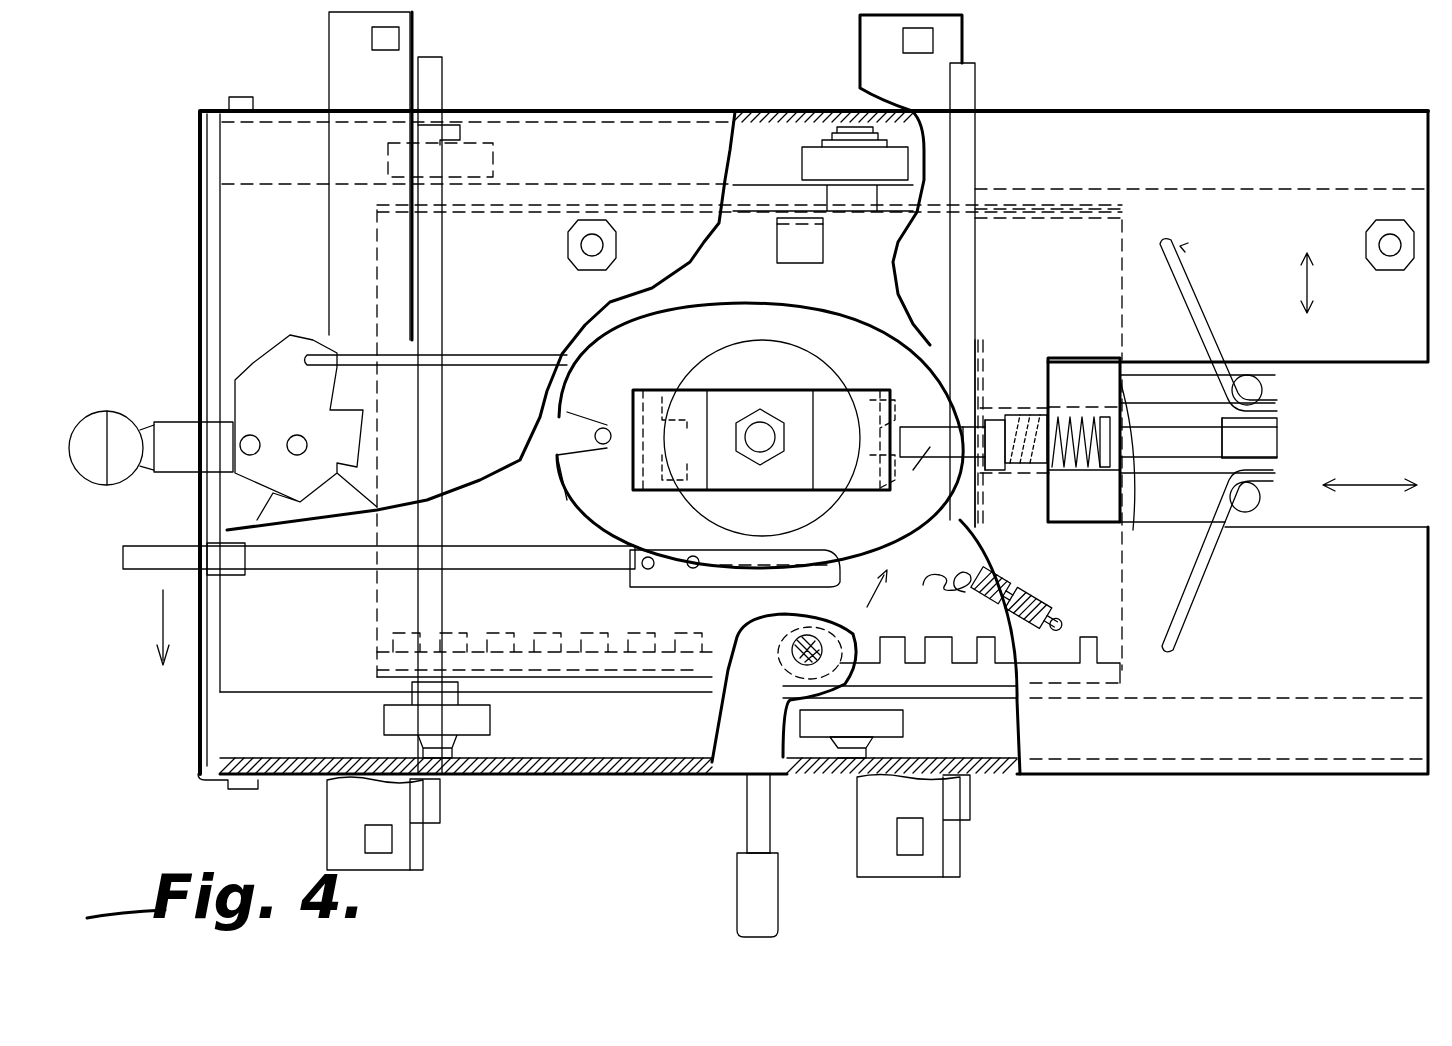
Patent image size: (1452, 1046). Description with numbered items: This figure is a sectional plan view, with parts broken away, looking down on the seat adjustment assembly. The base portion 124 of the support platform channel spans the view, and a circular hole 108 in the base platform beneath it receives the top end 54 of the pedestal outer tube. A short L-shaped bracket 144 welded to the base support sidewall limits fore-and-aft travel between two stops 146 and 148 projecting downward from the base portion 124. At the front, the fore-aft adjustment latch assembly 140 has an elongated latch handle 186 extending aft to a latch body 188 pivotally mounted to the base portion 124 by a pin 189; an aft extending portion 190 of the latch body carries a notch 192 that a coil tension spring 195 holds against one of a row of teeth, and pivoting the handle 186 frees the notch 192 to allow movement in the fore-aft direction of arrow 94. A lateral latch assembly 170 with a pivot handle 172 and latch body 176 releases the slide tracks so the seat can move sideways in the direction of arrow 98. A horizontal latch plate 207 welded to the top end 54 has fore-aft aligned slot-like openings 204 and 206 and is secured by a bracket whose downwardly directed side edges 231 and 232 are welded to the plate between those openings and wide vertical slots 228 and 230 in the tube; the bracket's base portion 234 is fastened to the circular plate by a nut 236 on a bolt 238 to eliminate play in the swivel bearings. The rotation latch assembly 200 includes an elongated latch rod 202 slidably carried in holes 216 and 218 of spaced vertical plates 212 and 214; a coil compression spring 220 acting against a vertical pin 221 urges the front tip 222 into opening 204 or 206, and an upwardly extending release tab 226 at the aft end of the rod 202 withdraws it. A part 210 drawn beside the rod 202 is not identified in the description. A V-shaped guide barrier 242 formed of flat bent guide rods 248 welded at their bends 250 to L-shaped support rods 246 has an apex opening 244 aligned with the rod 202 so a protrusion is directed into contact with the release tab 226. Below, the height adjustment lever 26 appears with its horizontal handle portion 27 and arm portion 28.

The base portion 124 is at (316, 236).
The L-shaped bracket 144 is at (823, 240).
The circular hole 108 is at (578, 320).
The stop 146 is at (575, 250).
The latch body 176 is at (300, 340).
The top end of outer tube 54 is at (823, 342).
The pivot handle 172 is at (122, 427).
The latch assembly 170 is at (220, 456).
The latch handle 186 is at (558, 553).
The fore-aft adjustment latch assembly 140 is at (672, 620).
The aft extending portion 190 is at (510, 637).
The latch plate 207 is at (712, 346).
The slot-like opening 206 is at (593, 441).
The slot-like opening 204 is at (917, 418).
The base portion of bracket 234 is at (733, 400).
The nut 236 is at (760, 426).
The bolt 238 is at (760, 462).
The lateral side edge 232 is at (660, 378).
The lateral side edge 231 is at (897, 385).
The vertical slot 230 is at (667, 485).
The vertical slot 228 is at (863, 485).
The front tip 222 is at (916, 479).
The latch body 188 is at (767, 583).
The pin 189 is at (820, 617).
The coil tension spring 195 is at (1031, 594).
The notch 192 is at (935, 655).
The lever 26 is at (745, 815).
The arm portion 28 is at (767, 827).
The handle portion 27 is at (757, 912).
The vertical plate 214 is at (1115, 398).
The coil compression spring 220 is at (1084, 467).
The vertical pin 221 is at (1018, 475).
The pin 210 is at (998, 372).
The vertical plate 212 is at (993, 333).
The latch assembly 200 is at (992, 355).
The hole 216 is at (985, 330).
The latch rod 202 is at (1034, 394).
The apex opening 244 is at (1198, 444).
The bends 250 is at (1277, 437).
The release tab 226 is at (1283, 453).
The fore-and-aft direction arrow 94 is at (1370, 472).
The guide rods 248 is at (1183, 262).
The guide barrier 242 is at (1186, 250).
The L-shaped rods 246 is at (1263, 388).
The hole 218 is at (1133, 530).
The stop 148 is at (1370, 238).
The lateral direction arrow 98 is at (1331, 283).